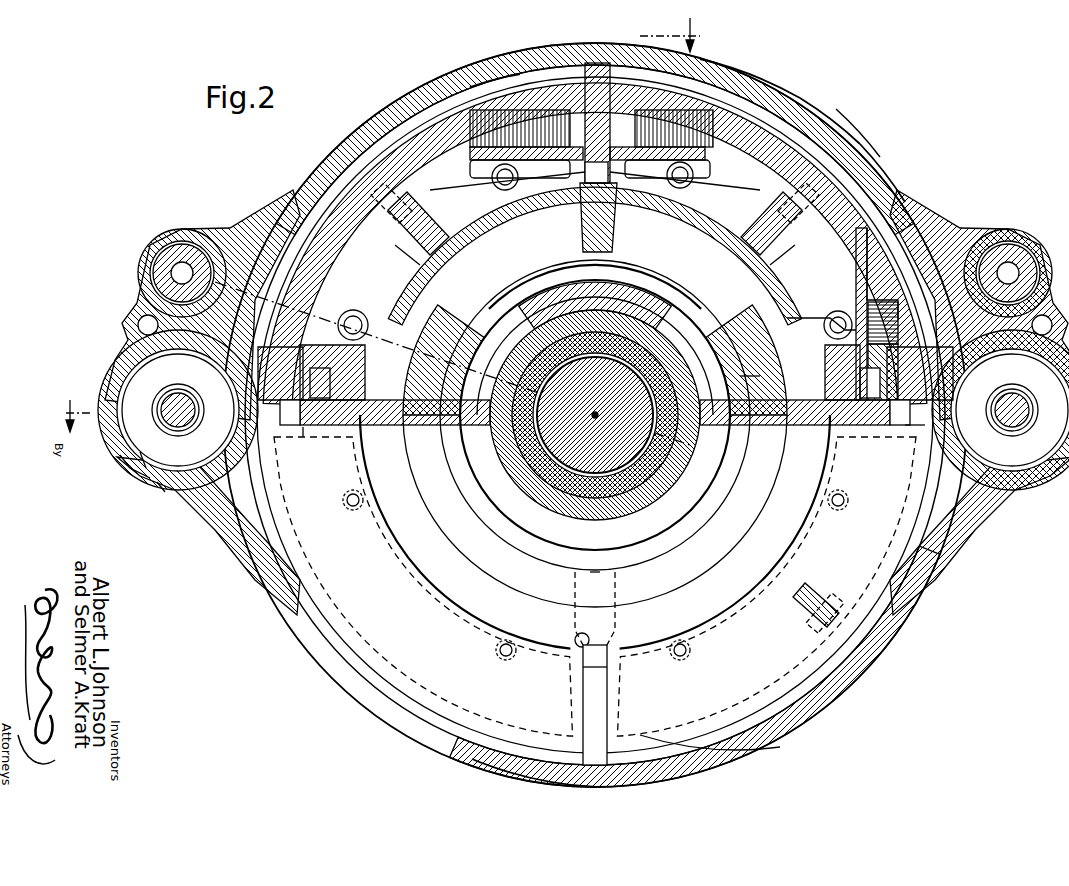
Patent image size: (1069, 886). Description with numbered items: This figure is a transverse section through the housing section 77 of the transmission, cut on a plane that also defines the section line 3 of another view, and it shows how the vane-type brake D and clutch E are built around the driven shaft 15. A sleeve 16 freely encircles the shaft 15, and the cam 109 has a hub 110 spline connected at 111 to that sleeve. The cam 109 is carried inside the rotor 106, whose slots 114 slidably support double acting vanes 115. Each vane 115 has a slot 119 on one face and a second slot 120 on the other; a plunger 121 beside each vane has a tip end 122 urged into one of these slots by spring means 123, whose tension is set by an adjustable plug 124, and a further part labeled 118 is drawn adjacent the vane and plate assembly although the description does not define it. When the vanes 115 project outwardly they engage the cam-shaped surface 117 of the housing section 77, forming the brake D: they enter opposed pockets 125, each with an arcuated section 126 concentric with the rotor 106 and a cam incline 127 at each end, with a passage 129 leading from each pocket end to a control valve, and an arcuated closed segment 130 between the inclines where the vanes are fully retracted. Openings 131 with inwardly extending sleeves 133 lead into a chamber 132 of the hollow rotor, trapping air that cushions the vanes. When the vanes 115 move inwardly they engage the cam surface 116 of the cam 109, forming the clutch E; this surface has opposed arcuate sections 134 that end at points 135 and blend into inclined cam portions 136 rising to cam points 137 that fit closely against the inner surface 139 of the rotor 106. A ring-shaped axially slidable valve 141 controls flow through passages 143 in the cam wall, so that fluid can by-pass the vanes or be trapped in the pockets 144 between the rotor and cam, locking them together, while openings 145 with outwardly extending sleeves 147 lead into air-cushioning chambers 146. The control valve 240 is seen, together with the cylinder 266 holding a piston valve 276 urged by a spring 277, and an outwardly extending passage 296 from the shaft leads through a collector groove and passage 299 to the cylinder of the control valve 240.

The section line 3— 3 is at (378, 225).
The driven shaft 15 is at (597, 420).
The sleeve 16 is at (762, 322).
The housing section 77 is at (755, 106).
The rotor 106 is at (800, 142).
The cam 109 is at (762, 488).
The hub 110 is at (760, 376).
The spline connection 111 is at (667, 468).
The slots 114 is at (266, 397).
The double acting vanes 115 is at (303, 428).
The cam surface 116 is at (452, 297).
The cam-shaped surface 117 is at (862, 208).
The bolt 118 is at (590, 110).
The slot 119 is at (606, 100).
The second slot 120 is at (597, 62).
The plunger 121 is at (565, 118).
The tip end or point 122 is at (918, 435).
The spring means 123 is at (522, 80).
The adjustable plug 124 is at (488, 82).
The pockets 125 is at (735, 98).
The arcuated section 126 is at (478, 758).
The cam incline 127 is at (275, 222).
The pocket or passage 129 is at (236, 300).
The arcuated closed segment 130 is at (257, 446).
The openings 131 is at (805, 632).
The chamber 132 is at (782, 742).
The inwardly extending sleeves 133 is at (378, 212).
The arcuate sections 134 is at (433, 505).
The points 135 is at (740, 547).
The inclined cam portions 136 is at (502, 592).
The cam point 137 is at (585, 192).
The inner surface 139 is at (796, 290).
The ring-shaped axially slidable valve 141 is at (625, 572).
The passages 143 is at (594, 416).
The pockets 144 is at (601, 511).
The openings 145 is at (428, 245).
The chambers 146 is at (586, 173).
The outwardly extending sleeve 147 is at (392, 245).
The control valve 240 is at (165, 268).
The cylinder 266 is at (157, 485).
The piston valve 276 is at (140, 455).
The spring 277 is at (122, 458).
The outwardly extending passage 296 is at (590, 406).
The passage 299 is at (345, 318).
The brake D is at (825, 160).
The clutch E is at (787, 318).